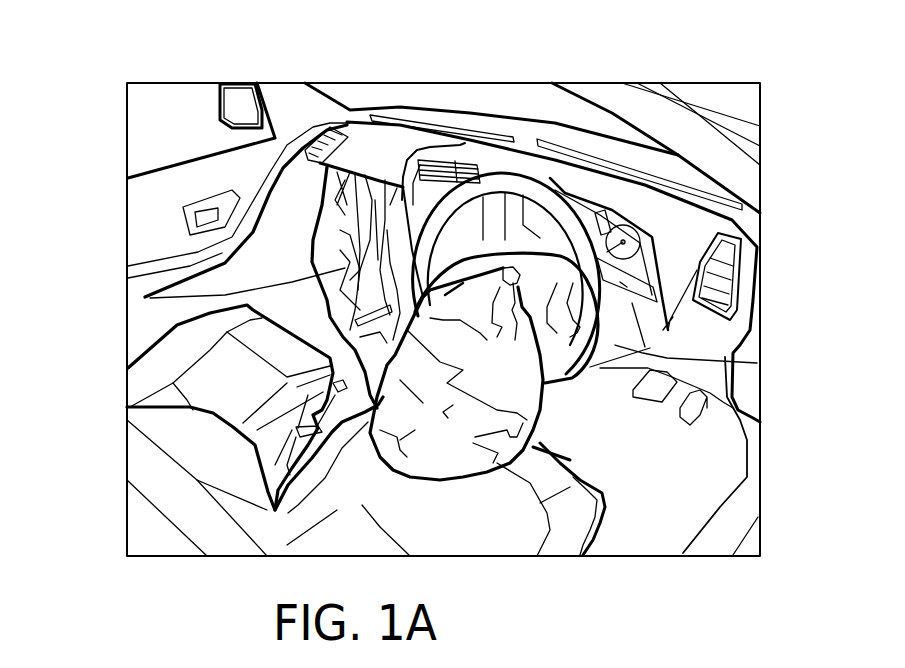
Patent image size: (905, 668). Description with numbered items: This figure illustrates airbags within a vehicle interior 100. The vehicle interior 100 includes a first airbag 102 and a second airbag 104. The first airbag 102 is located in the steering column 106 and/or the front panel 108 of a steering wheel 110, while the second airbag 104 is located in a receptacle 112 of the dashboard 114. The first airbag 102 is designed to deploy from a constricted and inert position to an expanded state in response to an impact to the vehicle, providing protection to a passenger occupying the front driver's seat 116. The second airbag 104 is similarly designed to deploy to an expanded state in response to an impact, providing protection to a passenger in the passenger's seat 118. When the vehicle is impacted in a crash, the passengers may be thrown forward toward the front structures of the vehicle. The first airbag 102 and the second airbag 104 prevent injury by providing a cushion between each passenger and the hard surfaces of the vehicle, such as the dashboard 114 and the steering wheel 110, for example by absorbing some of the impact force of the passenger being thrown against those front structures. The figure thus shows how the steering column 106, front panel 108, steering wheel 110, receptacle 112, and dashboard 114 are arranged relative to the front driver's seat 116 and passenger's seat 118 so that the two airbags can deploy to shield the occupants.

The vehicle interior 100 is at (176, 46).
The first airbag 102 is at (530, 415).
The second airbag 104 is at (150, 298).
The steering column 106 is at (748, 362).
The front panel 108 is at (517, 266).
The steering wheel 110 is at (497, 172).
The receptacle 112 is at (370, 162).
The dashboard 114 is at (313, 193).
The front driver's seat 116 is at (563, 523).
The passenger's seat 118 is at (152, 378).